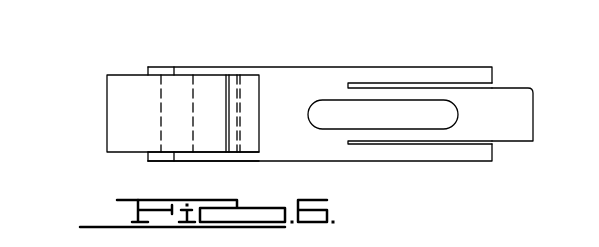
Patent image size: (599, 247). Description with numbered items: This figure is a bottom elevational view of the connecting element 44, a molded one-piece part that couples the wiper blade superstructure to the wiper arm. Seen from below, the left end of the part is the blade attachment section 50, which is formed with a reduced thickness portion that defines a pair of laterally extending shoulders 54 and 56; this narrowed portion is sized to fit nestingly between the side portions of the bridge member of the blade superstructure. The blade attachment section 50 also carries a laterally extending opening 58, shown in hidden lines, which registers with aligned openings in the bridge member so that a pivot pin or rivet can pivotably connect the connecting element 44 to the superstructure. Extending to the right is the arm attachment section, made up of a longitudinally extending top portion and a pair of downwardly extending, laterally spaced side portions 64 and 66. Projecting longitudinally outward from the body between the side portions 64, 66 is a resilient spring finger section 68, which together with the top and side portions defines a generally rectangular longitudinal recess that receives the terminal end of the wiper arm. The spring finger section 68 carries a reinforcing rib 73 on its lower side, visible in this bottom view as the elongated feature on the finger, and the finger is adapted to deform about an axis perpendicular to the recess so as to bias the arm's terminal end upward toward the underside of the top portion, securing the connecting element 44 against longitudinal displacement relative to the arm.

The connecting element 44 is at (365, 100).
The blade attachment section 50 is at (122, 108).
The shoulder 54 is at (212, 157).
The shoulder 56 is at (227, 67).
The laterally extending opening 58 is at (160, 91).
The side portion 64 is at (468, 68).
The side portion 66 is at (472, 152).
The resilient spring finger section 68 is at (520, 95).
The reinforcing rib 73 is at (373, 108).